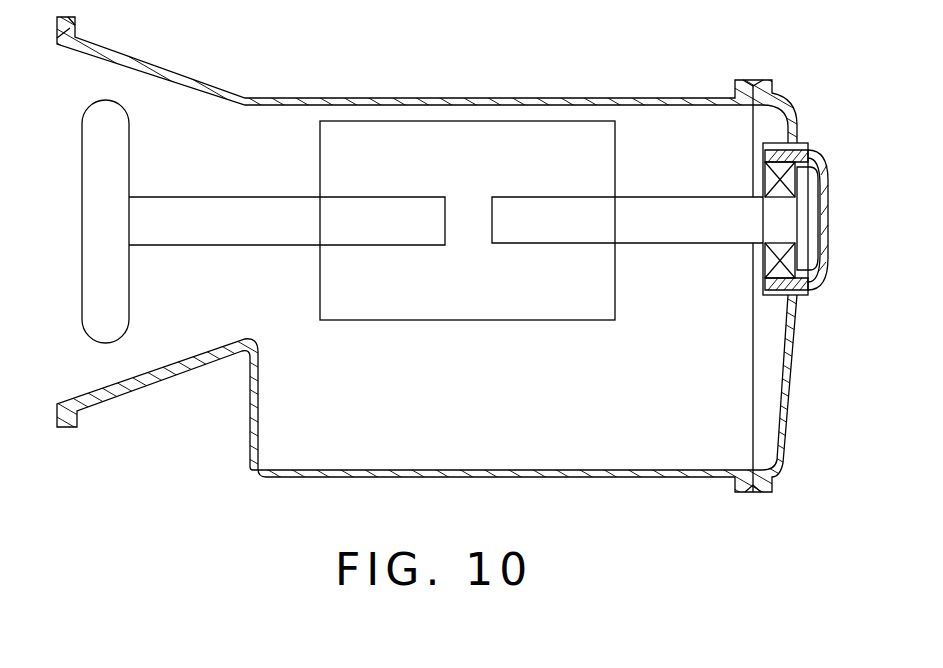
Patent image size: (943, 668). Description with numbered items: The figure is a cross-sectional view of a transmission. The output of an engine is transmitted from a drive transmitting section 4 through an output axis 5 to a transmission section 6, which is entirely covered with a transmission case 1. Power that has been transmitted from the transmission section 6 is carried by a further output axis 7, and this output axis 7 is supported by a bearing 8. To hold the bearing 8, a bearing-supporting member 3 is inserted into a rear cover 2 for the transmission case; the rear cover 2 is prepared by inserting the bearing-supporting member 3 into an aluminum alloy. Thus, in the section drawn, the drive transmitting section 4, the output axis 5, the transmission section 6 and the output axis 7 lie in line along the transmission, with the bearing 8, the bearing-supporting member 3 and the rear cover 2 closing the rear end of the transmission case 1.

The transmission case 1 is at (474, 98).
The rear cover 2 is at (820, 172).
The bearing-supporting member 3 is at (795, 145).
The drive transmitting section 4 is at (118, 142).
The output axis 5 is at (350, 205).
The transmission section 6 is at (480, 292).
The output axis 7 is at (585, 205).
The bearing 8 is at (770, 180).